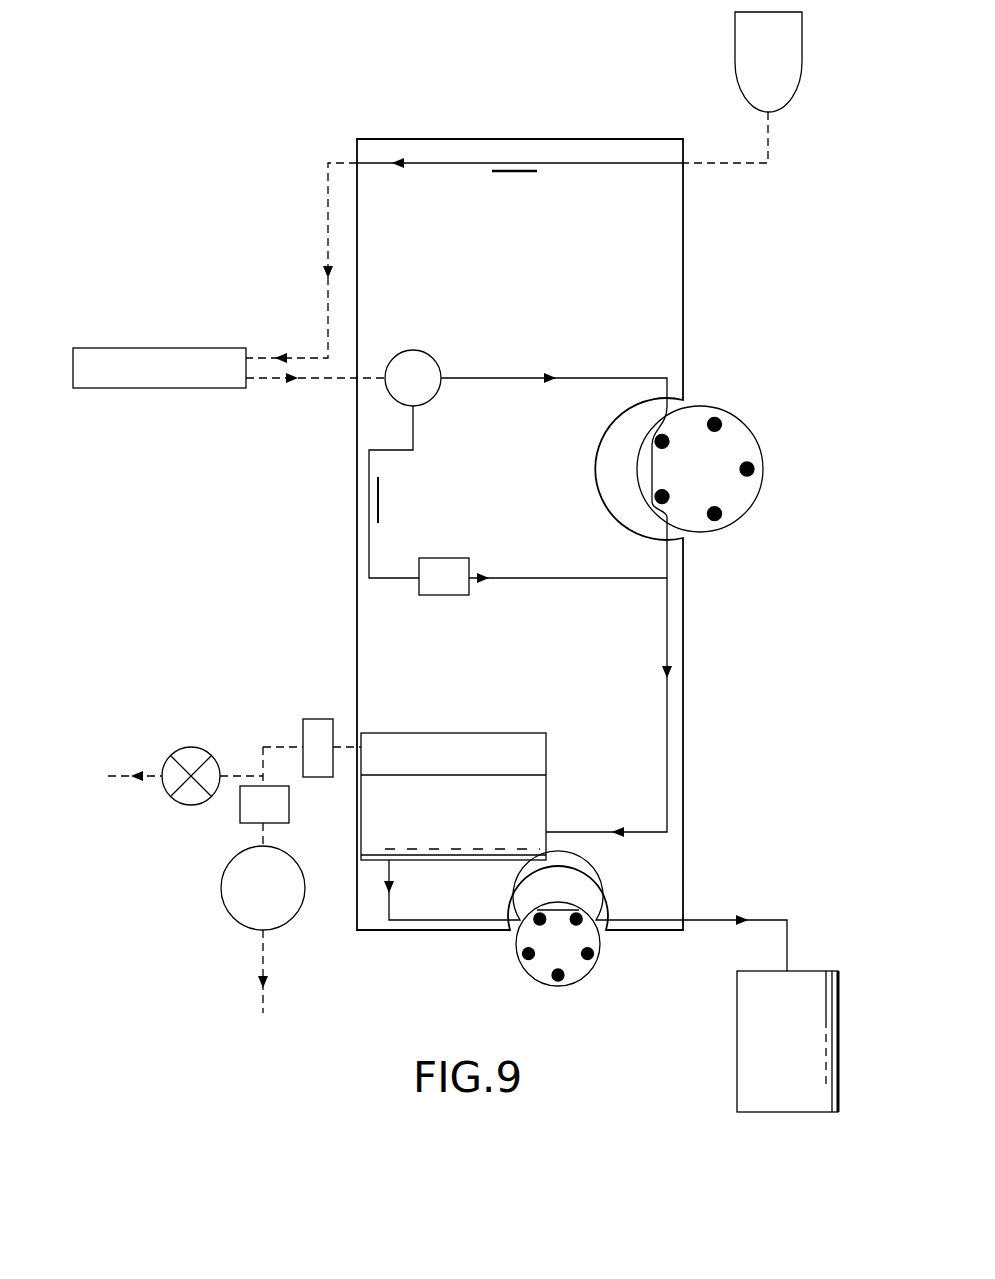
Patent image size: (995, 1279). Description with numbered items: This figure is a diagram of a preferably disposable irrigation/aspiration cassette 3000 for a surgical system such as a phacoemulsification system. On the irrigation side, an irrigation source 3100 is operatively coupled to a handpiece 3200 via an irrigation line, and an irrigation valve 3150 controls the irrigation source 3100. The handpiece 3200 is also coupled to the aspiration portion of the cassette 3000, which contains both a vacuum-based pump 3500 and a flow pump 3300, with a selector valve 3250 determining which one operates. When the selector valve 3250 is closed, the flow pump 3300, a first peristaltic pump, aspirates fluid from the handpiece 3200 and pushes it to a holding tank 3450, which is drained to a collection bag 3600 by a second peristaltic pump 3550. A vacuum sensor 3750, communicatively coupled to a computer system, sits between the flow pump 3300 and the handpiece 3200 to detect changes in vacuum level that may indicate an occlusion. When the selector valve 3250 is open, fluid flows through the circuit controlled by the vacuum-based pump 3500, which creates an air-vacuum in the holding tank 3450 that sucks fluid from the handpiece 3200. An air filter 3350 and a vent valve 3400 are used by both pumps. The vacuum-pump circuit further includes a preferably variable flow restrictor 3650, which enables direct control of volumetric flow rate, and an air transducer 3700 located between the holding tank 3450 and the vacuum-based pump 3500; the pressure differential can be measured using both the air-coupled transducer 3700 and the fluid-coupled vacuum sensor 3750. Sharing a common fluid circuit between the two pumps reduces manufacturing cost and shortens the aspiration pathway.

The irrigation/aspiration cassette 3000 is at (320, 102).
The irrigation source 3100 is at (735, 42).
The irrigation valve 3150 is at (513, 158).
The handpiece 3200 is at (160, 348).
The selector valve 3250 is at (356, 497).
The flow pump 3300 is at (763, 450).
The air filter 3350 is at (318, 719).
The vent valve 3400 is at (191, 747).
The holding tank 3450 is at (453, 733).
The vacuum-based pump 3500 is at (221, 888).
The second peristaltic pump 3550 is at (517, 965).
The collection bag 3600 is at (737, 1040).
The flow restrictor 3650 is at (445, 558).
The air transducer 3700 is at (240, 805).
The vacuum sensor 3750 is at (413, 350).